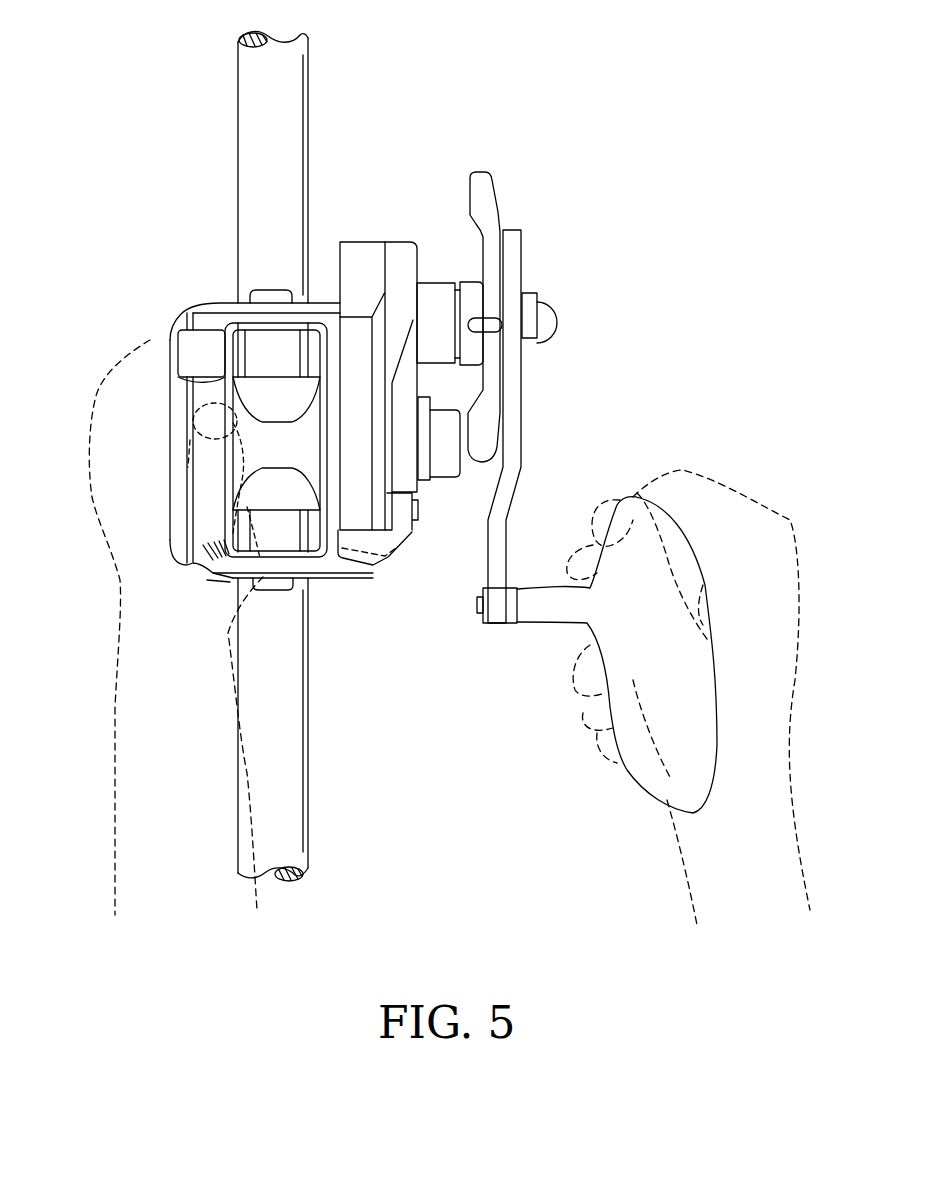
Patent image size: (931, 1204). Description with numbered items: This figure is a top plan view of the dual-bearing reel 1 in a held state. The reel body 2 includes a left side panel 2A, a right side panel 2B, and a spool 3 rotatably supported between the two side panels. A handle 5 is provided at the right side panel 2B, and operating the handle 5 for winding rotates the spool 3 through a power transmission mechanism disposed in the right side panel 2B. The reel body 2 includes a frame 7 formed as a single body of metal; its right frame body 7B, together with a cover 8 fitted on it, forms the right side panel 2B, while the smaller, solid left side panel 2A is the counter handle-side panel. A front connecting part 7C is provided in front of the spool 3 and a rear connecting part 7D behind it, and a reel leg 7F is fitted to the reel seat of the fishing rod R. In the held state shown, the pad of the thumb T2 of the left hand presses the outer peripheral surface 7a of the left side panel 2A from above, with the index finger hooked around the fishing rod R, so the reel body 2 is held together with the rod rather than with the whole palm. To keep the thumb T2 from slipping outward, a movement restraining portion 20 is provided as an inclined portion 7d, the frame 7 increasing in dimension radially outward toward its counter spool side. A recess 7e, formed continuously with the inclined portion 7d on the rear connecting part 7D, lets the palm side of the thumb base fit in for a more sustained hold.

The fishing rod R is at (288, 77).
The dual-bearing reel 1 is at (574, 154).
The reel body 2 is at (372, 234).
The left side panel 2A is at (173, 581).
The right side panel 2B is at (510, 397).
The spool 3 is at (275, 438).
The handle 5 is at (498, 552).
The frame 7 is at (253, 460).
The outer peripheral surface 7a is at (207, 498).
The right frame body 7B is at (372, 263).
The front connecting part 7C is at (218, 305).
The rear connecting part 7D is at (312, 578).
The inclined portion 7d is at (210, 490).
The recess 7e is at (213, 576).
The reel leg 7F is at (273, 296).
The cover 8 is at (405, 313).
The movement restraining portion 20 is at (168, 548).
The thumb T2 is at (207, 433).